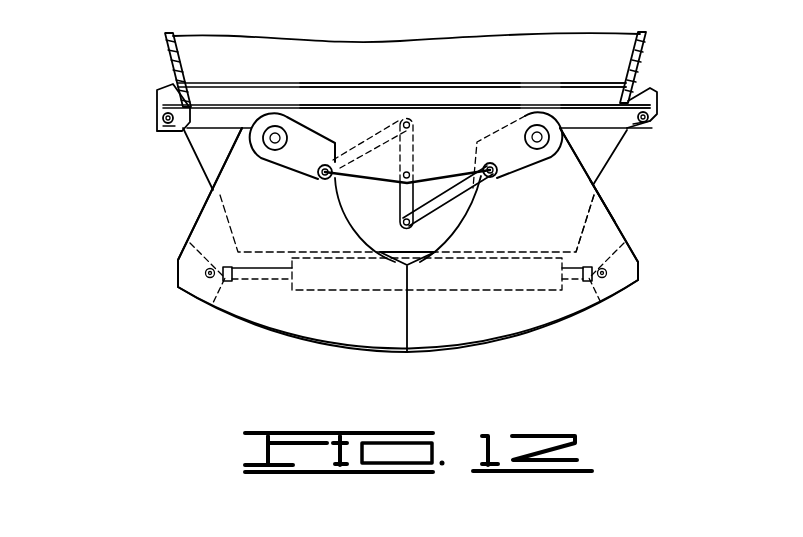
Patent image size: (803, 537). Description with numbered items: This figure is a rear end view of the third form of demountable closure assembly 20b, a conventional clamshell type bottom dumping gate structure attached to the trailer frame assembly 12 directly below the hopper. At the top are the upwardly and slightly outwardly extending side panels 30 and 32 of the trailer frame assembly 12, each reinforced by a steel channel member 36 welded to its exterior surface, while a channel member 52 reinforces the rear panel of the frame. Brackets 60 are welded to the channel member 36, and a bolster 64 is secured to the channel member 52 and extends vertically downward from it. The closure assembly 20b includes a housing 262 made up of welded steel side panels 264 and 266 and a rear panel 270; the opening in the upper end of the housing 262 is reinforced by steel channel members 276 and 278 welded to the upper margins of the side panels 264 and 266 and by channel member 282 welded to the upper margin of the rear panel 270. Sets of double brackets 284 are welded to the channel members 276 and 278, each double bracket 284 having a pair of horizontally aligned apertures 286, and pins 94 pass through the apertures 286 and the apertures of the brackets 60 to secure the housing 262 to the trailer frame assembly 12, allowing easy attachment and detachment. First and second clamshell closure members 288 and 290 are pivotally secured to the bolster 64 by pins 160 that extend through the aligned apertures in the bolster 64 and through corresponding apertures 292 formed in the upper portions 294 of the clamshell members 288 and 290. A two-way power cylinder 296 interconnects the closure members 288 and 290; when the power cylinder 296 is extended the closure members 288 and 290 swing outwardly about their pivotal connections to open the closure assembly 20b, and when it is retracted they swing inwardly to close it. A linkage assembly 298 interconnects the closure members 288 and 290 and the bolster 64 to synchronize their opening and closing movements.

The trailer frame assembly 12 is at (524, 88).
The demountable closure assembly 20b is at (206, 191).
The side panel 30 is at (165, 37).
The side panel 32 is at (642, 38).
The channel member 36 is at (163, 83).
The channel member 52 is at (422, 95).
The bracket 60 is at (157, 102).
The bolster 64 is at (373, 122).
The pin 94 is at (163, 117).
The pin 160 is at (275, 138).
The housing 262 is at (602, 192).
The side panel 264 is at (210, 177).
The side panel 266 is at (603, 172).
The rear panel 270 is at (600, 188).
The channel member 276 is at (182, 147).
The channel member 278 is at (626, 140).
The channel member 282 is at (603, 113).
The double bracket 284 is at (163, 124).
The aperture 286 is at (167, 132).
The first clamshell closure member 288 is at (337, 327).
The second clamshell closure member 290 is at (543, 317).
The aperture 292 is at (290, 146).
The upper portion 294 is at (240, 160).
The two-way power cylinder 296 is at (433, 273).
The linkage assembly 298 is at (447, 198).